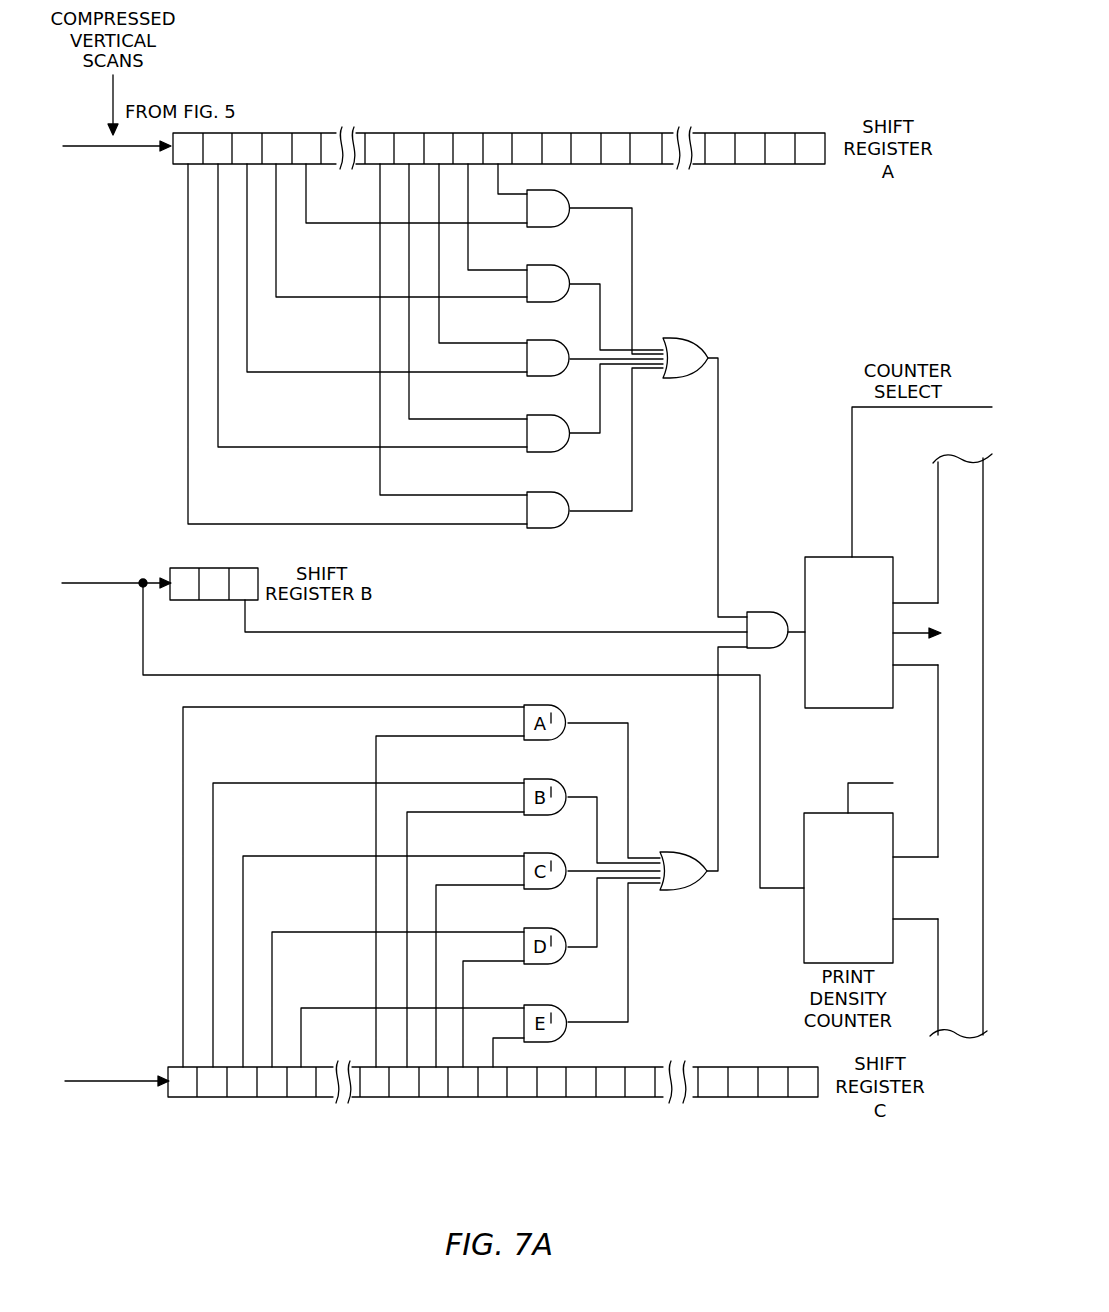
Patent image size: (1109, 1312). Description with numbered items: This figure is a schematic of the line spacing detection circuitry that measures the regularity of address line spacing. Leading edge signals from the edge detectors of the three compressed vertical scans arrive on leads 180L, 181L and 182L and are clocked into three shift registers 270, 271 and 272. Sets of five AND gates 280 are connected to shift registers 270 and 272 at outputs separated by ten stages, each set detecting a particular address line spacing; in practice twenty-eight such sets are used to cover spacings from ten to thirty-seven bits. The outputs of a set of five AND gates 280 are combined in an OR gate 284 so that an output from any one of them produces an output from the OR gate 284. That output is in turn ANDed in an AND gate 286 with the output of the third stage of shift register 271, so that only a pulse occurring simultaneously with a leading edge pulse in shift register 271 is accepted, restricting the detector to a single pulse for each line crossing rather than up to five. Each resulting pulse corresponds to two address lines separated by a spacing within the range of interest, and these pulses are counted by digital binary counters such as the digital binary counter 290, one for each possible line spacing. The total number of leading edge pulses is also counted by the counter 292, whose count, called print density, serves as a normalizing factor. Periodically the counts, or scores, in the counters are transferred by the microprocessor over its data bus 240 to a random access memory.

The lead 180L is at (62, 150).
The lead 181L is at (83, 587).
The lead 182L is at (152, 1088).
The shift register 270 is at (500, 133).
The shift register 271 is at (213, 567).
The shift register 272 is at (478, 1097).
The AND gates 280 is at (562, 191).
The OR gate 284 is at (700, 342).
The AND gate 286 is at (777, 612).
The digital binary counter 290 is at (870, 557).
The counter 292 is at (832, 812).
The data bus 240 is at (939, 512).